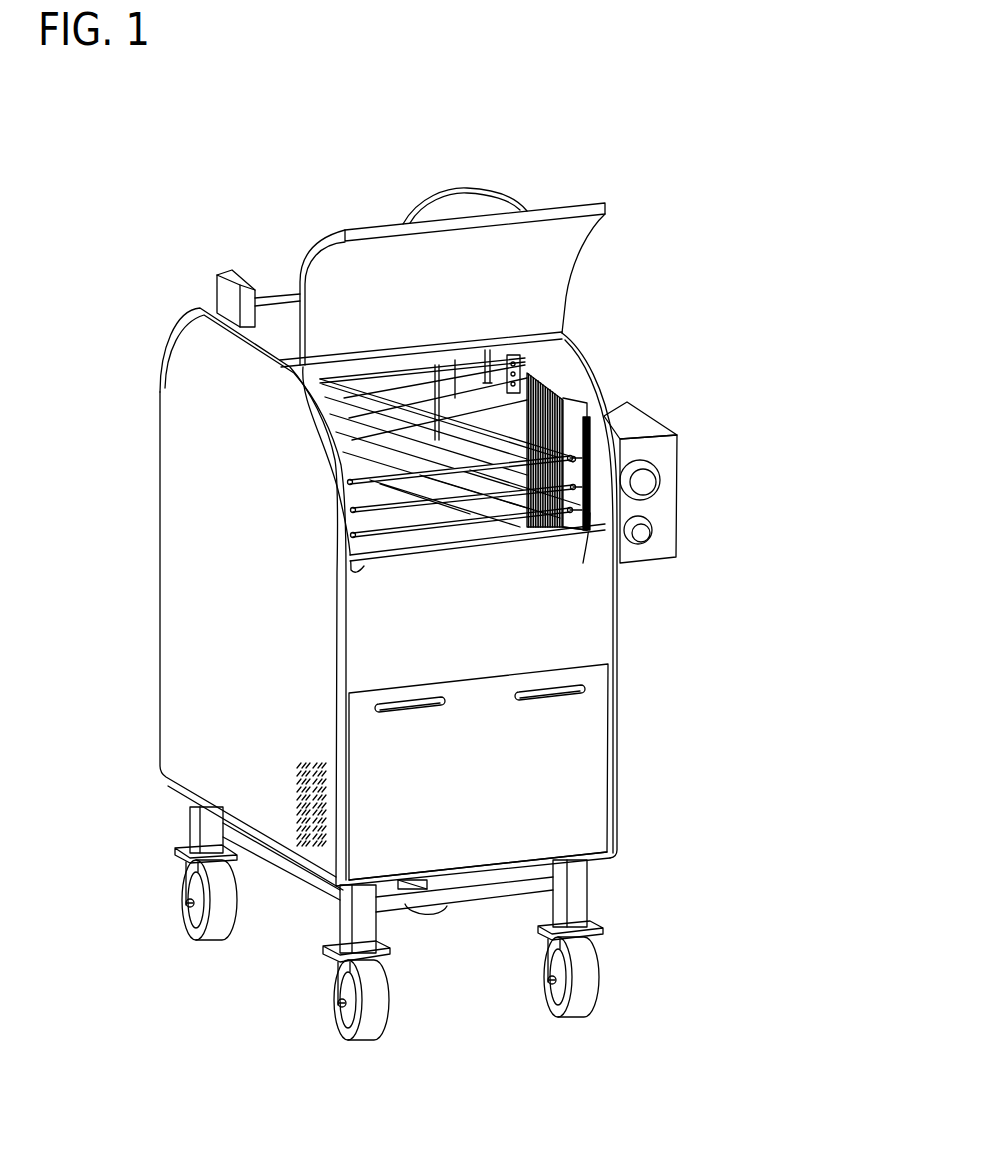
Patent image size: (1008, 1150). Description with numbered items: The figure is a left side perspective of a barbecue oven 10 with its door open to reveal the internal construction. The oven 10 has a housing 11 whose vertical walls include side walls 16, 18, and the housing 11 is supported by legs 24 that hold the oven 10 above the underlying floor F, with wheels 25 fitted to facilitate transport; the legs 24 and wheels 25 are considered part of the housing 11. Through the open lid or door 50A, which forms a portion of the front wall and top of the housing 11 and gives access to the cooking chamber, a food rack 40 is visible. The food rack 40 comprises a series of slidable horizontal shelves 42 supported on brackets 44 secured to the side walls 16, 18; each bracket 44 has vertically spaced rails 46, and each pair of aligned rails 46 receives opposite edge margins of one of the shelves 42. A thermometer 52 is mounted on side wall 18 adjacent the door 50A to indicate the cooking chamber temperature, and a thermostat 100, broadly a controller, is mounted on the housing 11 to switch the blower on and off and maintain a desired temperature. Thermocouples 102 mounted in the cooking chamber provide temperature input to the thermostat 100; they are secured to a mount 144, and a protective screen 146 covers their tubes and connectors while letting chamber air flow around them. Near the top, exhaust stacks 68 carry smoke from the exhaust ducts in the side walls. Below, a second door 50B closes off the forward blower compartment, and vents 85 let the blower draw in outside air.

The barbecue oven 10 is at (686, 120).
The housing 11 is at (156, 356).
The side wall 16 is at (573, 402).
The side wall 18 is at (178, 675).
The legs 24 is at (183, 828).
The wheels 25 is at (198, 930).
The food rack 40 is at (387, 566).
The horizontal shelves 42 is at (353, 425).
The brackets 44 is at (590, 430).
The rails 46 is at (570, 522).
The lid or door 50A is at (570, 207).
The door 50B is at (550, 767).
The thermometer 52 is at (643, 482).
The exhaust stacks 68 is at (225, 293).
The vents 85 is at (297, 796).
The thermostat 100 is at (641, 533).
The thermocouples 102 is at (490, 357).
The mount 144 is at (562, 338).
The protective screen 146 is at (550, 387).
The floor F is at (472, 1010).